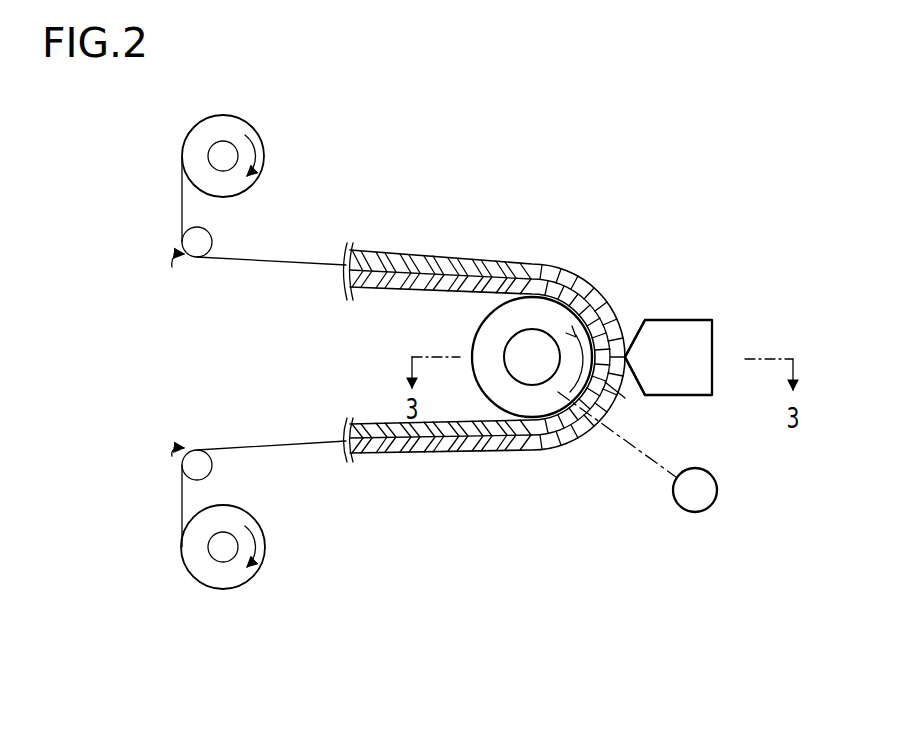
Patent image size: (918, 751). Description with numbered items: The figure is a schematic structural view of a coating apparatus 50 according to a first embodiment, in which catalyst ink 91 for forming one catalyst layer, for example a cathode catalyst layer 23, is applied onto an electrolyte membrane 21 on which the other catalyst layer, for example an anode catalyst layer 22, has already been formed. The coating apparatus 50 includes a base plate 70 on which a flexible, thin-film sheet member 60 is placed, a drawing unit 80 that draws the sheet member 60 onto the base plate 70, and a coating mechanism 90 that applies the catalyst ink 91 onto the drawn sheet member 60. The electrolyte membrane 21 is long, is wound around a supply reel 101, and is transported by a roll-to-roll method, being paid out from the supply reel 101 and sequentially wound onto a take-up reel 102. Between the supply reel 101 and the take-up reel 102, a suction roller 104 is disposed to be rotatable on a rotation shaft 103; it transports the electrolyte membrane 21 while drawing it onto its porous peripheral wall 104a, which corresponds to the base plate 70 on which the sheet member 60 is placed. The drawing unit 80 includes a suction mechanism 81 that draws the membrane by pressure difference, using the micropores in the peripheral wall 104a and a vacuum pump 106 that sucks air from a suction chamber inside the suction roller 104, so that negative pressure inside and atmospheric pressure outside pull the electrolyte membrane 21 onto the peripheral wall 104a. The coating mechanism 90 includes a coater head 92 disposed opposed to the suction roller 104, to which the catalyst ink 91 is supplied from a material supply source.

The electrolyte membrane 21 is at (422, 258).
The anode catalyst layer 22 is at (379, 292).
The cathode catalyst layer 23 is at (485, 363).
The coating apparatus 50 is at (604, 137).
The sheet member 60 is at (238, 265).
The base plate 70 is at (512, 346).
The drawing unit 80 is at (605, 383).
The suction mechanism 81 is at (634, 455).
The coating mechanism 90 is at (690, 308).
The catalyst ink 91 is at (610, 302).
The coater head 92 is at (700, 386).
The supply reel 101 is at (222, 580).
The take-up reel 102 is at (221, 128).
The rotation shaft 103 is at (525, 338).
The suction roller 104 is at (566, 321).
The peripheral wall 104a is at (593, 293).
The vacuum pump 106 is at (700, 501).